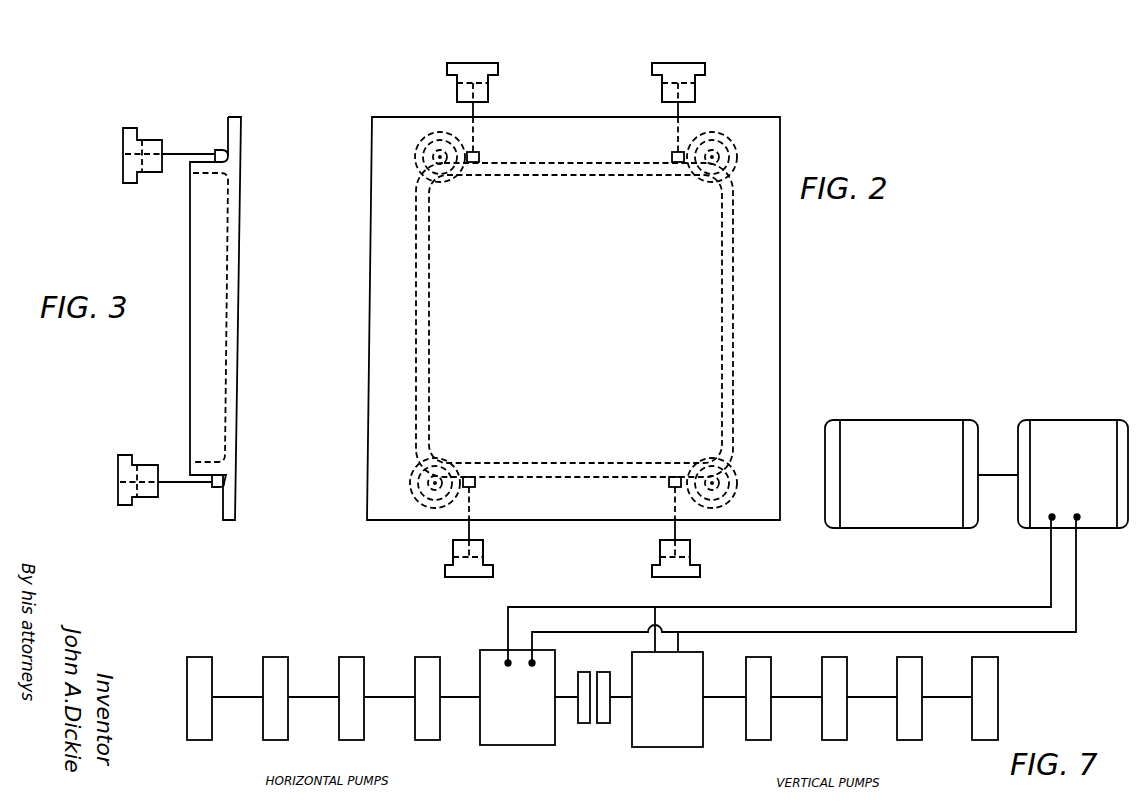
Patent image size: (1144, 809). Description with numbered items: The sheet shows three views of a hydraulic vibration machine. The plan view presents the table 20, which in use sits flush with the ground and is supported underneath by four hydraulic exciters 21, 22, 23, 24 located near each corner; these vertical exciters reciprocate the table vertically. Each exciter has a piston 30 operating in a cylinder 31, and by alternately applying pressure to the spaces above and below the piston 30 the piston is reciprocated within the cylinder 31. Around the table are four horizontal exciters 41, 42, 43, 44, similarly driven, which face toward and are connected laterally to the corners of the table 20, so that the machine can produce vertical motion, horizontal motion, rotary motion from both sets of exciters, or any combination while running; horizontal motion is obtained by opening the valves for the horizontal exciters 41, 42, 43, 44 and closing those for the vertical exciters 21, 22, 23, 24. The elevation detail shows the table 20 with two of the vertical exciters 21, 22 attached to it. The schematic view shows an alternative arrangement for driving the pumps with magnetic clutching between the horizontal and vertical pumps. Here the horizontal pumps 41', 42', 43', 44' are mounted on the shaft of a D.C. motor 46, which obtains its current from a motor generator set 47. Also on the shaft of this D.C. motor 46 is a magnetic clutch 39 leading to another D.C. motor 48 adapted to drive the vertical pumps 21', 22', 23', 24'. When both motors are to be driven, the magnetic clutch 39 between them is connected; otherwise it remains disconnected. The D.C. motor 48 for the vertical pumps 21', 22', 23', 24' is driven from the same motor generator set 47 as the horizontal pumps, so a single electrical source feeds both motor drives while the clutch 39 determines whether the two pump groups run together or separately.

In FIG. 2, the table 20 is at (371, 330).
In FIG. 3, the table 20 is at (242, 330).
In FIG. 2, the hydraulic exciter 21 is at (402, 157).
In FIG. 3, the hydraulic exciter 21 is at (169, 172).
In FIG. 2, the hydraulic exciter 22 is at (416, 507).
In FIG. 3, the hydraulic exciter 22 is at (165, 503).
In FIG. 2, the hydraulic exciter 23 is at (723, 138).
In FIG. 2, the hydraulic exciter 24 is at (727, 507).
In FIG. 2, the piston 30 is at (494, 61).
In FIG. 2, the cylinder 31 is at (463, 80).
In FIG. 2, the horizontal exciter 41 is at (489, 112).
In FIG. 2, the horizontal exciter 42 is at (489, 527).
In FIG. 2, the horizontal exciter 43 is at (663, 107).
In FIG. 2, the horizontal exciter 44 is at (656, 527).
In FIG. 7, the magnetic clutch 39 is at (593, 726).
In FIG. 7, the D.C. motor 46 is at (511, 745).
In FIG. 7, the motor generator set 47 is at (1035, 416).
In FIG. 7, the D.C. motor 48 is at (678, 743).
In FIG. 7, the horizontal pump 41' is at (203, 684).
In FIG. 7, the horizontal pump 42' is at (431, 684).
In FIG. 7, the horizontal pump 43' is at (279, 684).
In FIG. 7, the horizontal pump 44' is at (355, 684).
In FIG. 7, the vertical pump 21' is at (759, 713).
In FIG. 7, the vertical pump 22' is at (985, 713).
In FIG. 7, the vertical pump 23' is at (835, 713).
In FIG. 7, the vertical pump 24' is at (910, 713).